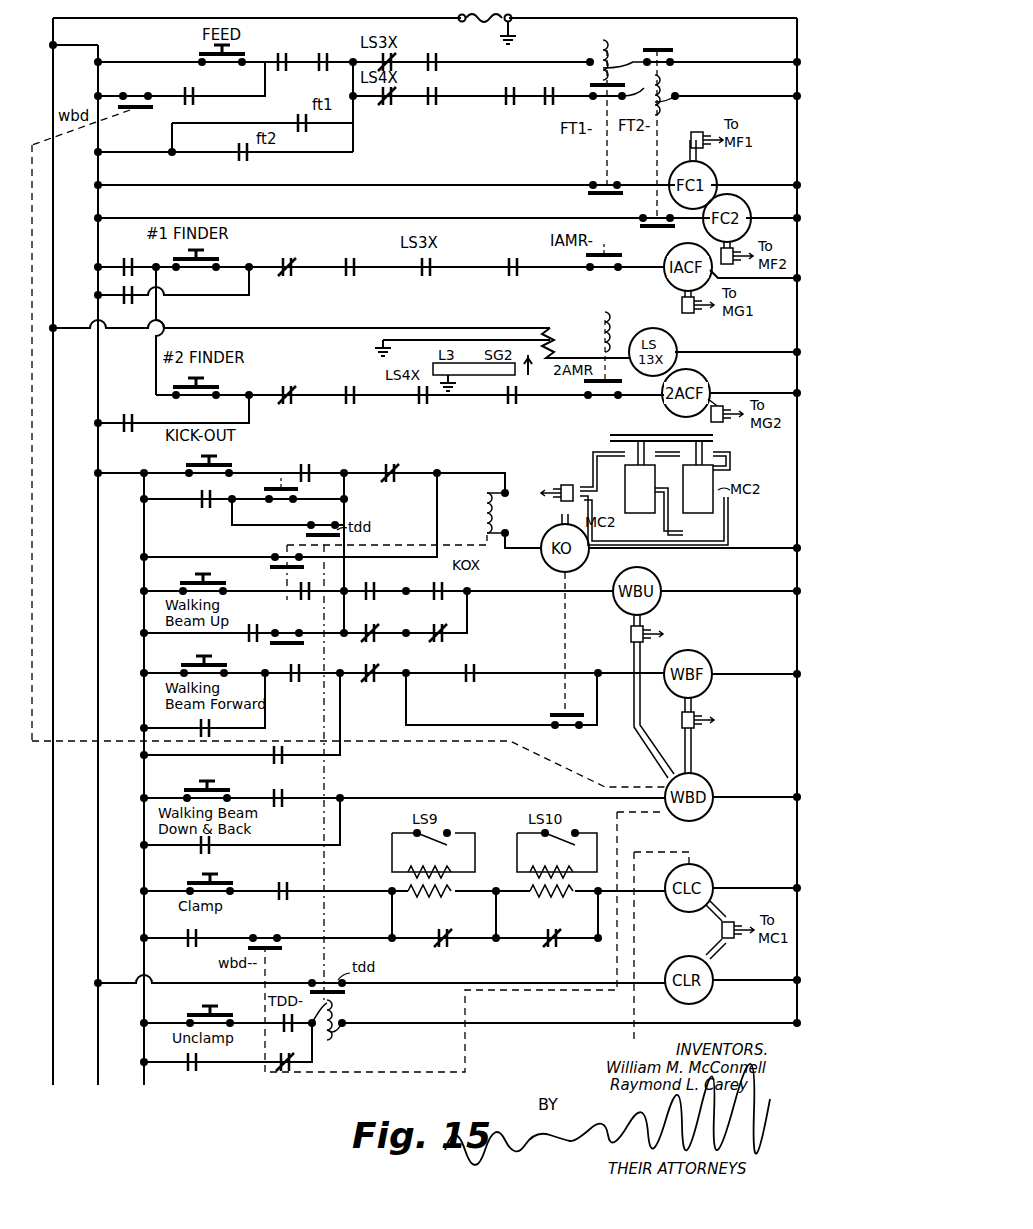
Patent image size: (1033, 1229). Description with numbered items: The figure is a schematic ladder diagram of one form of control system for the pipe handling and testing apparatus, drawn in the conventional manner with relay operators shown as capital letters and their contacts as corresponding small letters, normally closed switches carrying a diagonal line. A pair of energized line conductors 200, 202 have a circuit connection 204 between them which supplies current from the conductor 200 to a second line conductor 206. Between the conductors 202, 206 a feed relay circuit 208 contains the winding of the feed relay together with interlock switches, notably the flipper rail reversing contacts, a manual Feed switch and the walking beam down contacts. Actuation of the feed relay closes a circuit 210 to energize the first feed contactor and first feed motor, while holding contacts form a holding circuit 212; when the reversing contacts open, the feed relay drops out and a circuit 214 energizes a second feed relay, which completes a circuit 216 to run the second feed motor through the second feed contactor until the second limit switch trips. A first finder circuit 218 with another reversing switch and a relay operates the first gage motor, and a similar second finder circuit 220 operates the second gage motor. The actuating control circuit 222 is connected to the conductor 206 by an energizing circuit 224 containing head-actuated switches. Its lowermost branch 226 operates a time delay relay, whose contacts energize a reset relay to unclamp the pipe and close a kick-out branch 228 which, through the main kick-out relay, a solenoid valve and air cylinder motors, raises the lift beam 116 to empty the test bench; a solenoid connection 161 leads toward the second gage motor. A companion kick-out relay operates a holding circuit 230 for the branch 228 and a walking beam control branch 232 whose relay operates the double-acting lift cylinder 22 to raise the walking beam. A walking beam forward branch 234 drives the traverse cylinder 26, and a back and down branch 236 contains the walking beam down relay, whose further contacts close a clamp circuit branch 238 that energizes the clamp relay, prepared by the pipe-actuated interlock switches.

The line conductor 200 is at (75, 64).
The line conductor 202 is at (797, 117).
The circuit connection 204 is at (66, 50).
The second line conductor 206 is at (98, 369).
The feed relay circuit 208 is at (470, 62).
The feed contactor circuit 210 is at (482, 184).
The holding circuit 212 is at (122, 152).
The second feed relay circuit 214 is at (485, 102).
The second feed contactor circuit 216 is at (514, 218).
The first finder circuit 218 is at (280, 272).
The second finder circuit 220 is at (280, 390).
The actuating control circuit 222 is at (144, 531).
The energizing circuit 224 is at (128, 463).
The lowermost branch 226 is at (407, 1022).
The kick-out circuit branch 228 is at (489, 467).
The holding circuit 230 is at (375, 566).
The walking beam control branch 232 is at (538, 597).
The walking beam forward branch 234 is at (391, 665).
The walking beam back and down branch 236 is at (366, 796).
The clamp circuit branch 238 is at (650, 900).
The lift beam 116 is at (657, 436).
The solenoid connection 161 is at (718, 425).
The lift cylinder 22 is at (696, 628).
The traverse cylinder 26 is at (731, 724).